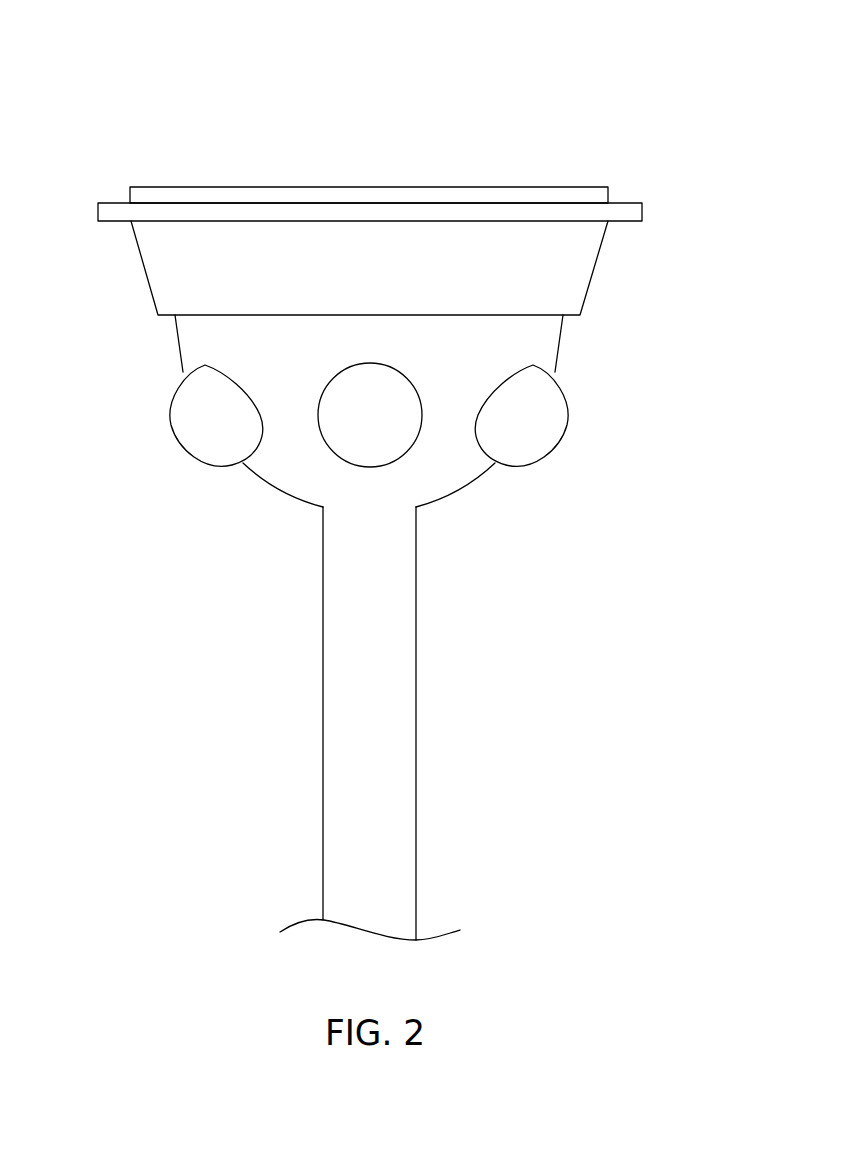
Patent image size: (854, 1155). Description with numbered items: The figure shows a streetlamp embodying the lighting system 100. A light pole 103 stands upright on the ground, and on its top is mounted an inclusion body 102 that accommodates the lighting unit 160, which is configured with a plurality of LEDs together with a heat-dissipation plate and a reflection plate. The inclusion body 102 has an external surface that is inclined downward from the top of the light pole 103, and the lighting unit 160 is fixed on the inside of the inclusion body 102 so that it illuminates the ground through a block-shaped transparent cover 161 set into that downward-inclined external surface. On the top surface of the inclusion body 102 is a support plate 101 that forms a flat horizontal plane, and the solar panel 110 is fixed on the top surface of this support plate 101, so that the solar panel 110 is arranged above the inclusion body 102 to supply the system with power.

The lighting system 100 is at (397, 480).
The solar panel 110 is at (367, 186).
The support plate 101 is at (620, 202).
The inclusion body 102 is at (595, 267).
The light pole 103 is at (416, 722).
The lighting unit 160 is at (408, 468).
The transparent cover 161 is at (545, 428).